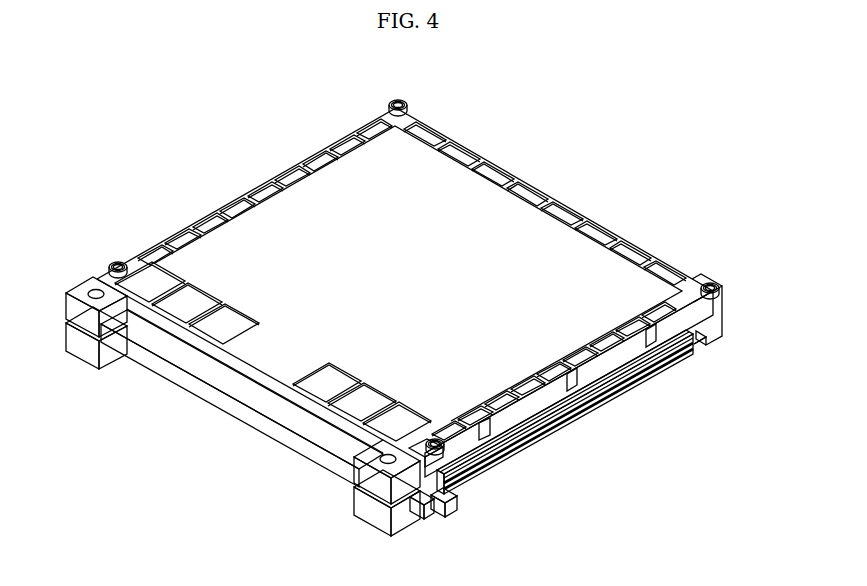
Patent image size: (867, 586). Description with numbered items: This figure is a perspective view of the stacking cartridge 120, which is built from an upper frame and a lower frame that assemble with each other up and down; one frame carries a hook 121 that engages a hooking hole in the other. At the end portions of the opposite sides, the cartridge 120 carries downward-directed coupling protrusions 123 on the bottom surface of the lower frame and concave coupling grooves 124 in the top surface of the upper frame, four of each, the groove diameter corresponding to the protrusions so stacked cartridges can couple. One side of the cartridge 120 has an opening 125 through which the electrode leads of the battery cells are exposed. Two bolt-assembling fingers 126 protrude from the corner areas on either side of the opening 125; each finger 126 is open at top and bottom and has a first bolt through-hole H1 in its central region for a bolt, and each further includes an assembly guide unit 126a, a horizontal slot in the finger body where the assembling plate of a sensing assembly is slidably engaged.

The stacking cartridge 120 is at (221, 166).
The hook 121 is at (578, 403).
The coupling protrusion 123 is at (444, 504).
The coupling groove 124 is at (398, 100).
The opening 125 is at (250, 388).
The bolt-assembling finger 126 is at (80, 351).
The assembly guide unit 126a is at (408, 494).
The first bolt through-hole H1 is at (95, 290).